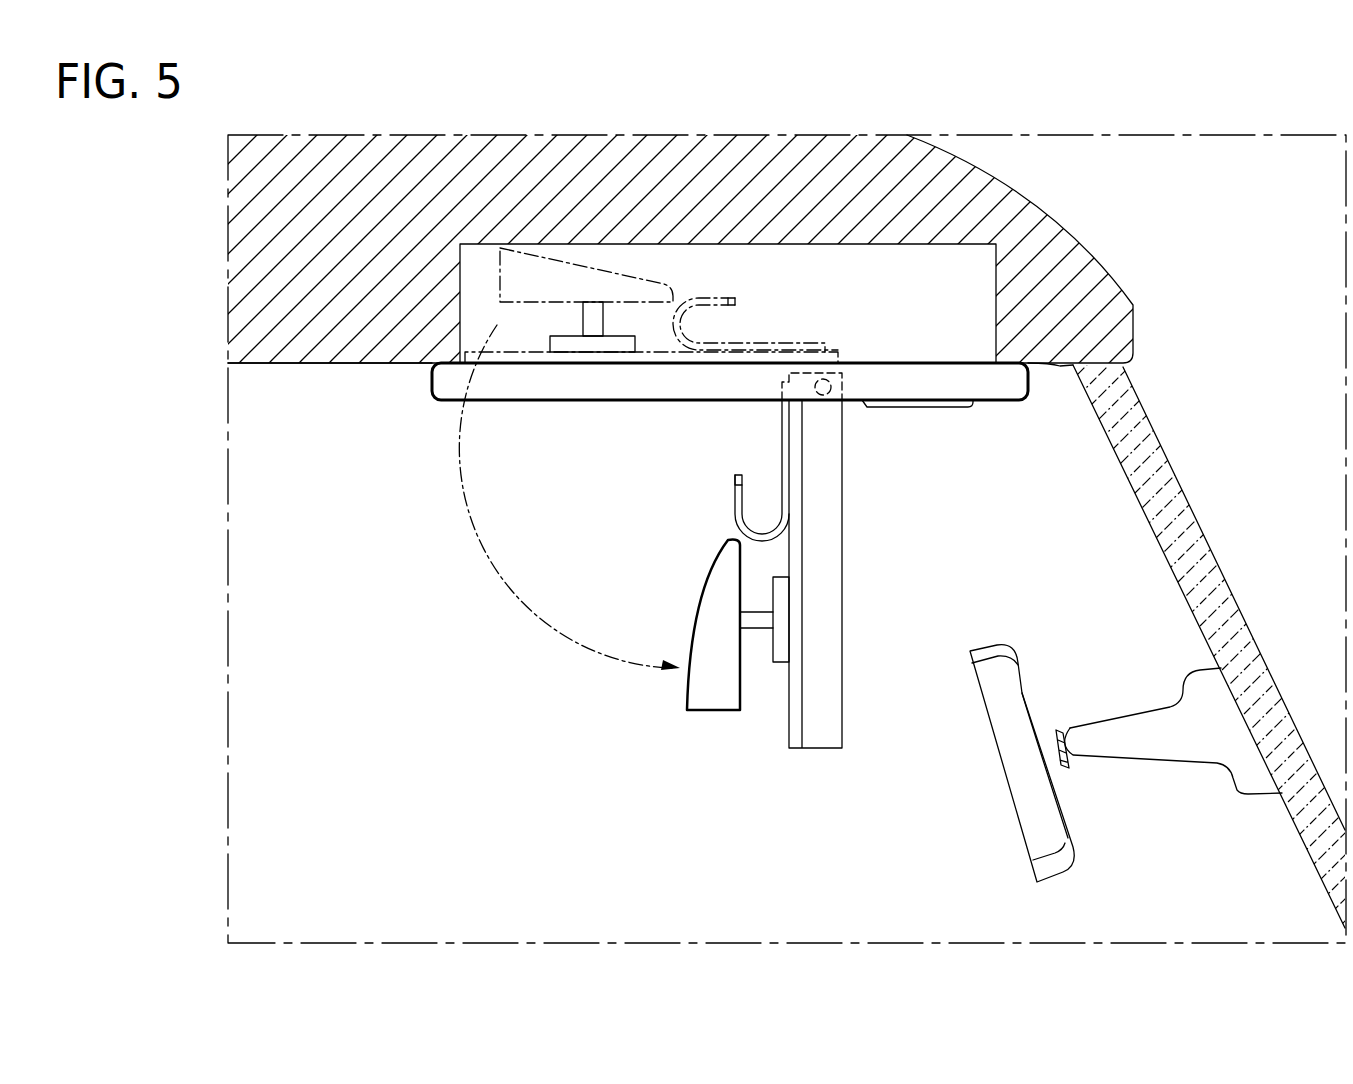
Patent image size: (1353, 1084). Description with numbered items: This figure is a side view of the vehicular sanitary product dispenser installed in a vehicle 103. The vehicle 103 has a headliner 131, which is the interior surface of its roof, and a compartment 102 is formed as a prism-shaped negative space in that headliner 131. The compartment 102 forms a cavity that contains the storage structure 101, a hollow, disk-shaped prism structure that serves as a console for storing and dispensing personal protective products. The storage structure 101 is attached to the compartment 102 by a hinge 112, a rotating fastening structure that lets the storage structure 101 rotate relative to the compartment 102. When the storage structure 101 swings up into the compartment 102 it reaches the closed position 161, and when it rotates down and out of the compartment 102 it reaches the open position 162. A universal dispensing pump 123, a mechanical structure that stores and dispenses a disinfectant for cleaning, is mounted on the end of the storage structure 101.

The storage structure 101 is at (842, 603).
The compartment 102 is at (962, 292).
The vehicle 103 is at (1025, 190).
The hinge 112 is at (832, 391).
The universal dispensing pump 123 is at (684, 713).
The headliner 131 is at (310, 340).
The closed position 161 is at (506, 421).
The open position 162 is at (665, 633).